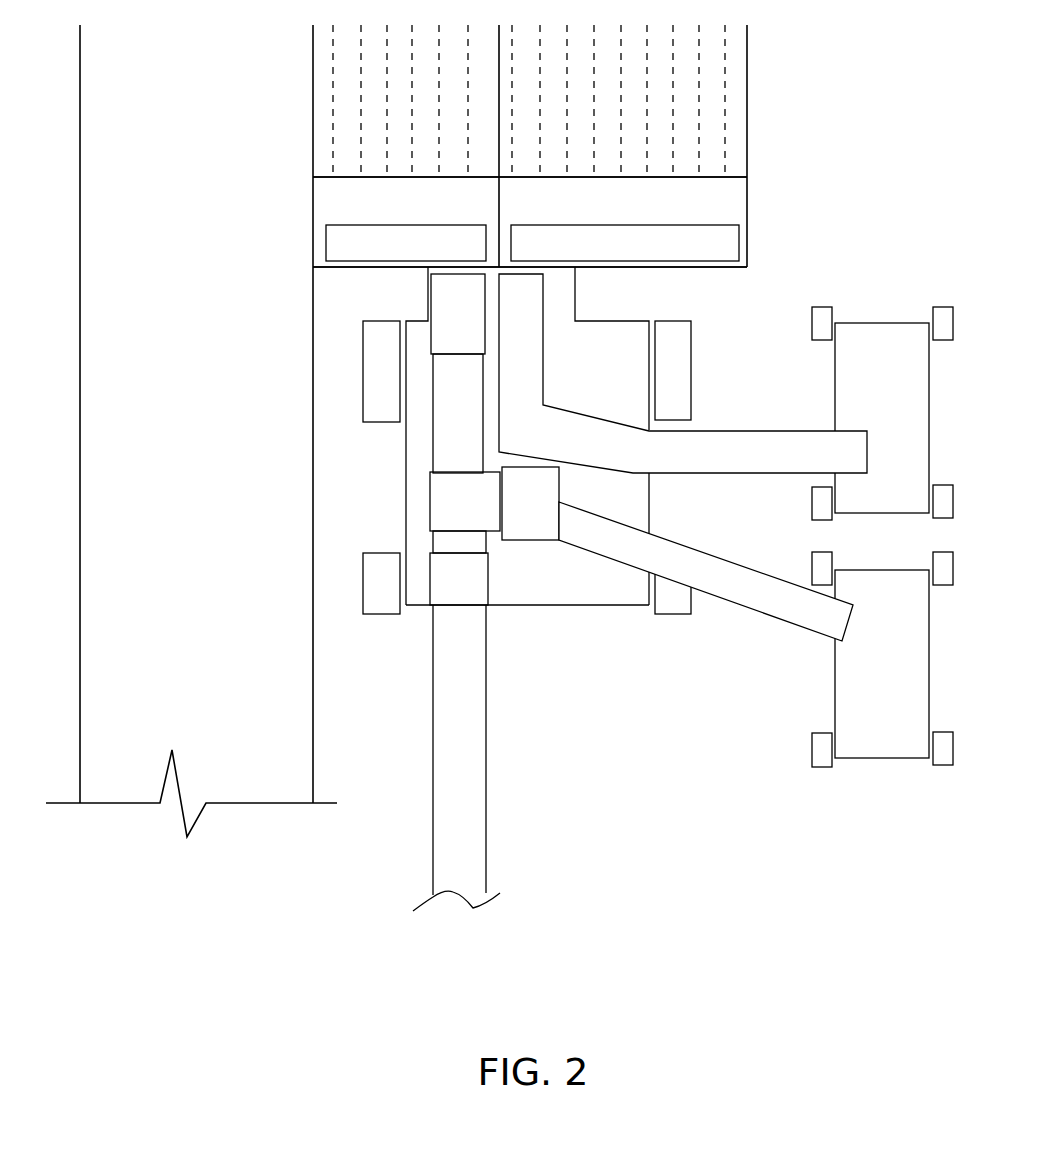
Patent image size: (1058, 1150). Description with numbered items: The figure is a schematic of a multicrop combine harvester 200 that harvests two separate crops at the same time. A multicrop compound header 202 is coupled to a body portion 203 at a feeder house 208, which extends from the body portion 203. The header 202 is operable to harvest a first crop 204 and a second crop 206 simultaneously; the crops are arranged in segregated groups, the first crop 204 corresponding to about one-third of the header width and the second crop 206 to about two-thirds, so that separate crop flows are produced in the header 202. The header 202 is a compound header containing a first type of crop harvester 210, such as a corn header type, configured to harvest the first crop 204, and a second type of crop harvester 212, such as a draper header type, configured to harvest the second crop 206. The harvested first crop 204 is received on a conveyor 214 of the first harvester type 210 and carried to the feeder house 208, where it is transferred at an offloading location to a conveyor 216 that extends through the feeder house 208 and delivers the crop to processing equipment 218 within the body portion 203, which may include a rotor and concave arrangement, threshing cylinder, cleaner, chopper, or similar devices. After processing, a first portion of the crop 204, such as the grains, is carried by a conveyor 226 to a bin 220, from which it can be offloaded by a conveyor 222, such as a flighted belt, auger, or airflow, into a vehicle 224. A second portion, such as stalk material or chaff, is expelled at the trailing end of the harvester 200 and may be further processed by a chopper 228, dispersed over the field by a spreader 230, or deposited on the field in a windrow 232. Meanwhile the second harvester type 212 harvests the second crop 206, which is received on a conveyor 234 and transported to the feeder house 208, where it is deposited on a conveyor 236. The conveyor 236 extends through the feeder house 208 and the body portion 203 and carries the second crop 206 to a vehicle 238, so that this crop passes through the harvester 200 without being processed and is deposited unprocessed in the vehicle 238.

The multicrop combine harvester 200 is at (527, 608).
The multicrop compound header 202 is at (749, 223).
The body portion 203 is at (407, 432).
The first crop 204 is at (374, 118).
The second crop 206 is at (574, 108).
The feeder house 208 is at (575, 292).
The first type of crop harvester 210 is at (352, 215).
The second type of crop harvester 212 is at (558, 215).
The conveyor 214 is at (327, 248).
The conveyor 216 is at (431, 293).
The processing equipment 218 is at (433, 437).
The bin 220 is at (555, 516).
The conveyor 222 is at (737, 605).
The vehicle 224 is at (862, 699).
The conveyor / trailing end 226 is at (430, 505).
The chopper 228 is at (430, 545).
The spreader 230 is at (428, 582).
The windrow 232 is at (486, 810).
The conveyor 234 is at (704, 224).
The conveyor 236 is at (588, 415).
The vehicle 238 is at (853, 375).